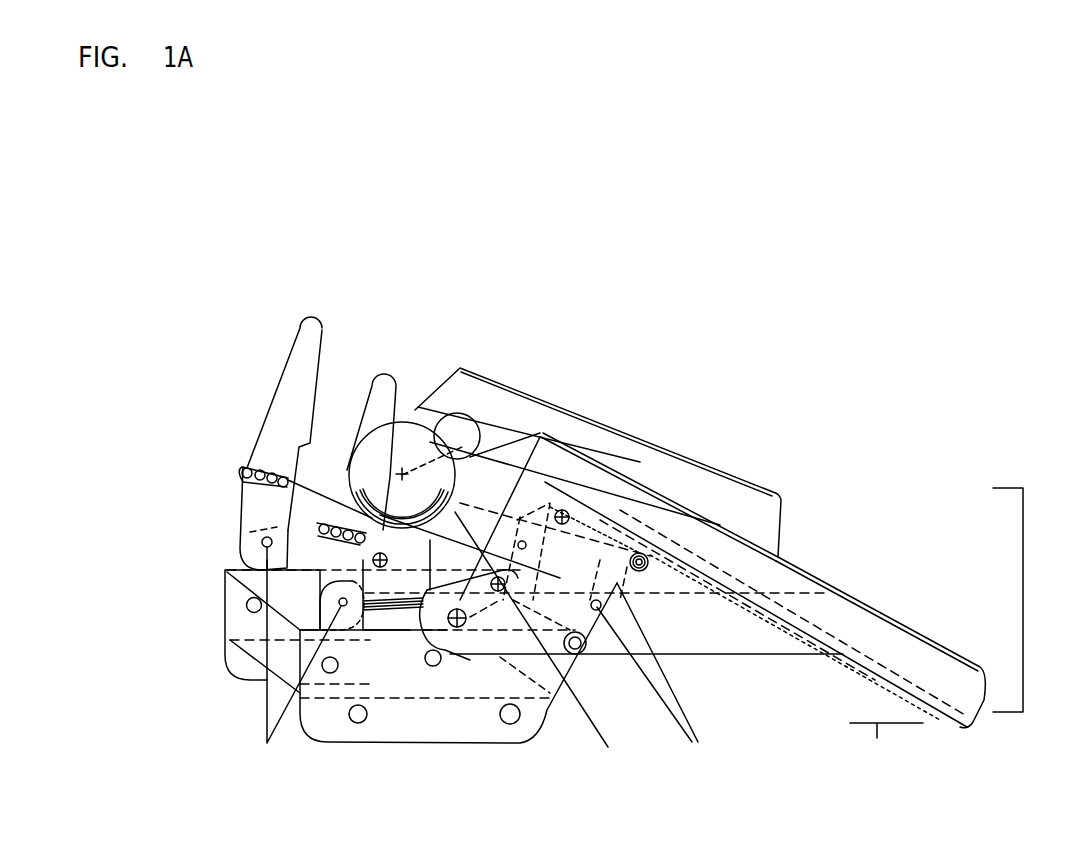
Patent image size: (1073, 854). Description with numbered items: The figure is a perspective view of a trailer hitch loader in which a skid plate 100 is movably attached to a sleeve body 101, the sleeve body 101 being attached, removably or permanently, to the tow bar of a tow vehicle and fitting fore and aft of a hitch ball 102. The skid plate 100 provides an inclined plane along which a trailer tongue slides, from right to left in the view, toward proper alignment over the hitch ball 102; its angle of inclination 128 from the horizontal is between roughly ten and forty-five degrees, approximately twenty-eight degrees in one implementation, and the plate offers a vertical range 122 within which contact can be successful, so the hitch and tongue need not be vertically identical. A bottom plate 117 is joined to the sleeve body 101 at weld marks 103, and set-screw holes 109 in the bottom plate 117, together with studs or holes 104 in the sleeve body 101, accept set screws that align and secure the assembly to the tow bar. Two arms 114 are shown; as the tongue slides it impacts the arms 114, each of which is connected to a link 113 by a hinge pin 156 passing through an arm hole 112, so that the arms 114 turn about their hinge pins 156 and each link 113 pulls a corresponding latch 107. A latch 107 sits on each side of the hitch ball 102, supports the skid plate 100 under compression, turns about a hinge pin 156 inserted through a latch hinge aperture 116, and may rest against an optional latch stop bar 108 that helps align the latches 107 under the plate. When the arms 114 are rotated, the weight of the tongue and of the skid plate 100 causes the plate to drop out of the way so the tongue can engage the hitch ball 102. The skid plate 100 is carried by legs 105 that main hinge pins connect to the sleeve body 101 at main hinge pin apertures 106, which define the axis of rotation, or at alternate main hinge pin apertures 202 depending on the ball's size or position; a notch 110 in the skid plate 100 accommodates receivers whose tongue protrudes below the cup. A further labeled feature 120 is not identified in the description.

The skid plate 100 is at (758, 513).
The sleeve body 101 is at (387, 647).
The hitch ball 102 is at (355, 500).
The weld marks 103 is at (508, 724).
The studs or holes 104 is at (324, 662).
The legs 105 is at (502, 578).
The main hinge pin apertures 106 is at (495, 580).
The latch 107 is at (667, 635).
The latch stop bar 108 is at (641, 570).
The set-screw holes 109 is at (548, 697).
The notch 110 is at (478, 471).
The arm hole 112 is at (267, 743).
The link 113 is at (322, 527).
The arm 114 is at (378, 396).
The latch hinge aperture 116 is at (580, 653).
The bottom plate 117 is at (240, 663).
The pedal cover 120 is at (600, 602).
The vertical range 122 is at (1000, 512).
The angle of inclination 128 is at (863, 722).
The hinge pin 156 is at (326, 533).
The alternate main hinge pin apertures 202 is at (433, 665).